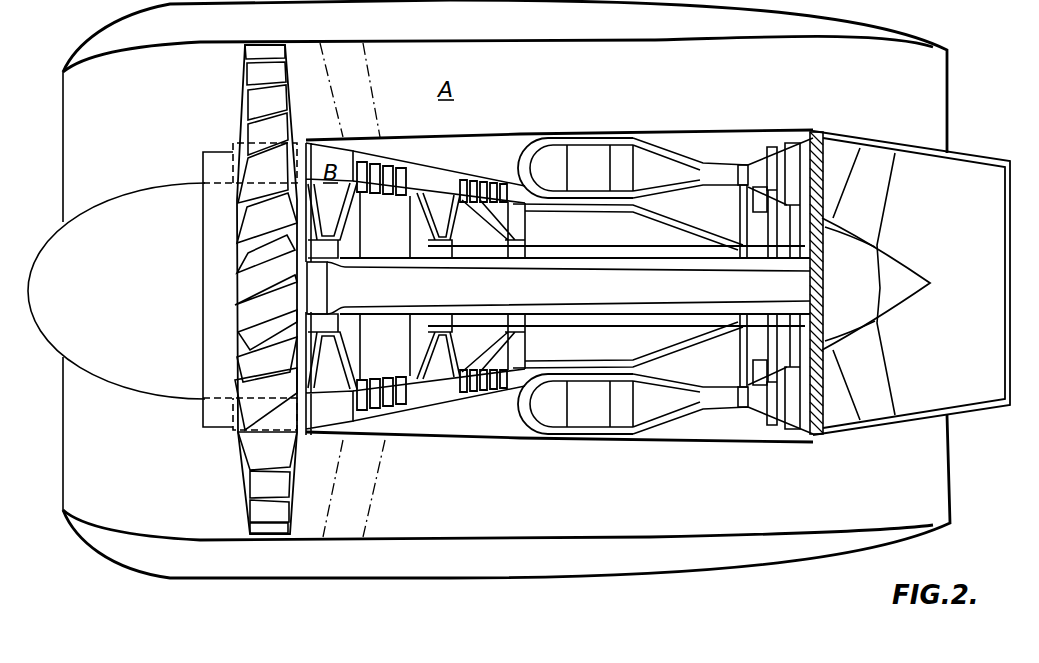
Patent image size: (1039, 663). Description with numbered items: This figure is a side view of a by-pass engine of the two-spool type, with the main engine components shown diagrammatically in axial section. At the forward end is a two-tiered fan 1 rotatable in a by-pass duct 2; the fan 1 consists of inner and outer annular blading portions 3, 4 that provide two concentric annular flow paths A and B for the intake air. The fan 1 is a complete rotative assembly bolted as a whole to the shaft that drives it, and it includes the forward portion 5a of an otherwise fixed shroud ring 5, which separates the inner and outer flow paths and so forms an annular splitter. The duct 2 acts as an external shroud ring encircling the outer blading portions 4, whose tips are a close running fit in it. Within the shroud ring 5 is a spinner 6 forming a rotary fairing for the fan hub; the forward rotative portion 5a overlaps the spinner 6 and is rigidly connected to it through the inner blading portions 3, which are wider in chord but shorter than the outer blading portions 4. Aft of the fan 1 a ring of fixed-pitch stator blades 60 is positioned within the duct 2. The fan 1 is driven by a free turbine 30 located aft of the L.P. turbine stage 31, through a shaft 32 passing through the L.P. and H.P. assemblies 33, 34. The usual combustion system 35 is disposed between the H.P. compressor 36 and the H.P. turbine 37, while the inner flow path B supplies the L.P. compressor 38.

The fan 1 is at (236, 433).
The by-pass duct 2 is at (78, 48).
The inner annular blading portions 3 is at (233, 170).
The outer annular blading portions 4 is at (242, 75).
The shroud ring 5 is at (333, 142).
The forward portion of shroud ring 5a is at (220, 150).
The spinner 6 is at (108, 203).
The free turbine 30 is at (815, 136).
The L.P. turbine stage 31 is at (772, 155).
The shaft 32 is at (563, 295).
The L.P. assembly 33 is at (640, 257).
The H.P. assembly 34 is at (550, 243).
The combustion system 35 is at (600, 147).
The H.P. compressor 36 is at (480, 178).
The H.P. turbine 37 is at (745, 165).
The L.P. compressor 38 is at (398, 173).
The stator blades 60 is at (370, 78).